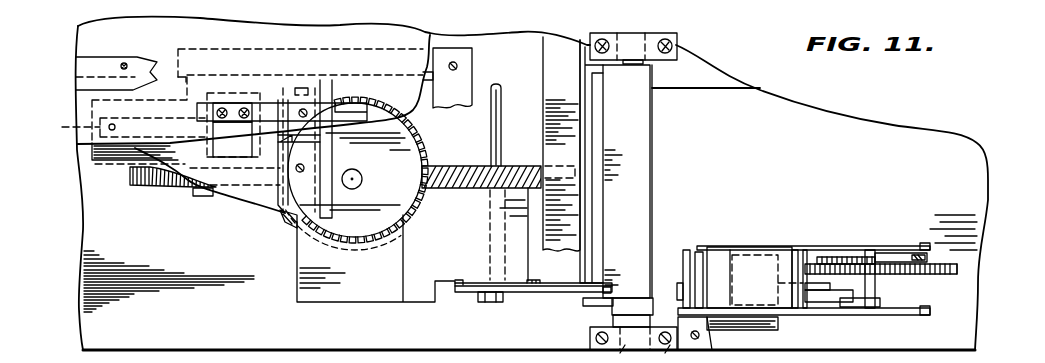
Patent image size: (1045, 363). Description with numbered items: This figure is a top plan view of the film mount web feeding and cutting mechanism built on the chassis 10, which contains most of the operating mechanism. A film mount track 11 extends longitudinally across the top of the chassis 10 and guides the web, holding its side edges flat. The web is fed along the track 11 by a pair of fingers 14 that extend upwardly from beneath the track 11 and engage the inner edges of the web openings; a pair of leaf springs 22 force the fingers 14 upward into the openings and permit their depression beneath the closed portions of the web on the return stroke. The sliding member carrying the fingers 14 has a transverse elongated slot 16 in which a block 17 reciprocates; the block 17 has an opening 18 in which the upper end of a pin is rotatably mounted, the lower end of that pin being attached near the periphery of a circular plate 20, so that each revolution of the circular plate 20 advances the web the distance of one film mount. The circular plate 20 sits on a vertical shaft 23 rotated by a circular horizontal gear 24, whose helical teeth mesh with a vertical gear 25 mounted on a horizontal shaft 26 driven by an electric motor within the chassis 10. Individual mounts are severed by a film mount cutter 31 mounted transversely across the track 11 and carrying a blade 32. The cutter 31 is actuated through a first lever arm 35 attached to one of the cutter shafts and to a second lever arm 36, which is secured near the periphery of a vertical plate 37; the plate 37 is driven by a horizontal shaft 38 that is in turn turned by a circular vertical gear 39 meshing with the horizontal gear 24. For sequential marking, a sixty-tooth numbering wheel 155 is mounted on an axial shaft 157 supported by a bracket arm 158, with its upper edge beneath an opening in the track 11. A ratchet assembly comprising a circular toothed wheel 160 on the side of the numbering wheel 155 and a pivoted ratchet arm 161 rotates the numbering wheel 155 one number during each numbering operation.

The chassis 10 is at (267, 340).
The film mount track 11 is at (108, 68).
The fingers 14 is at (238, 152).
The transverse elongated slot 16 is at (312, 90).
The block 17 is at (283, 214).
The opening 18 is at (305, 149).
The circular plate 20 is at (368, 234).
The leaf springs 22 is at (62, 128).
The vertical shaft 23 is at (362, 182).
The circular horizontal gear 24 is at (406, 225).
The vertical gear 25 is at (137, 187).
The horizontal shaft 26 is at (202, 197).
The film mount cutter 31 is at (650, 156).
The blade 32 is at (597, 121).
The first lever arm 35 is at (584, 301).
The second lever arm 36 is at (517, 292).
The vertical plate 37 is at (461, 285).
The horizontal shaft 38 is at (518, 72).
The circular vertical gear 39 is at (450, 166).
The numbering wheel 155 is at (960, 268).
The axial shaft 157 is at (870, 288).
The bracket arm 158 is at (780, 246).
The circular toothed wheel 160 is at (842, 258).
The ratchet arm 161 is at (900, 255).